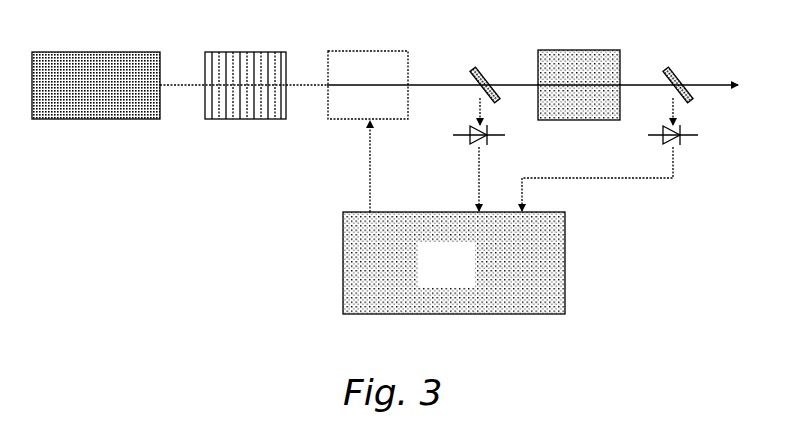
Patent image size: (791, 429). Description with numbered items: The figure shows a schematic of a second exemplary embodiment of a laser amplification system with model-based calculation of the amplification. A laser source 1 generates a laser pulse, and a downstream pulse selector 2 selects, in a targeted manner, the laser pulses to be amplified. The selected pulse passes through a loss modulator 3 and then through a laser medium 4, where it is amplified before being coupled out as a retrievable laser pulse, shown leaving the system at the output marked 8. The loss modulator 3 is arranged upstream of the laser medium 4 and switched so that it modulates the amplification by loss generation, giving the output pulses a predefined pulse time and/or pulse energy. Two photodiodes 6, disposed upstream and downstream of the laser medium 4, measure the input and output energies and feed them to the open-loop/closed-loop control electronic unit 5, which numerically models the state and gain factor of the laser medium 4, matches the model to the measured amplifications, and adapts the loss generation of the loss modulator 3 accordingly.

The laser source 1 is at (81, 115).
The pulse selector 2 is at (245, 115).
The loss modulator 3 is at (343, 62).
The laser medium 4 is at (567, 67).
The open-loop/closed-loop control electronic unit 5 is at (454, 263).
The photodiodes 6 is at (468, 145).
The output beam 8 is at (699, 72).